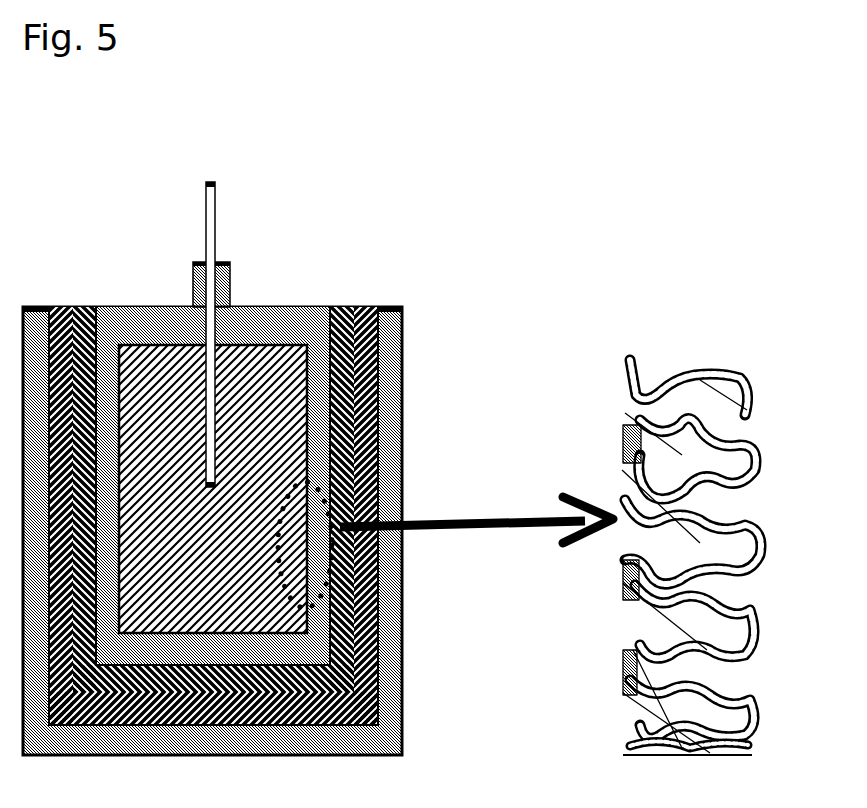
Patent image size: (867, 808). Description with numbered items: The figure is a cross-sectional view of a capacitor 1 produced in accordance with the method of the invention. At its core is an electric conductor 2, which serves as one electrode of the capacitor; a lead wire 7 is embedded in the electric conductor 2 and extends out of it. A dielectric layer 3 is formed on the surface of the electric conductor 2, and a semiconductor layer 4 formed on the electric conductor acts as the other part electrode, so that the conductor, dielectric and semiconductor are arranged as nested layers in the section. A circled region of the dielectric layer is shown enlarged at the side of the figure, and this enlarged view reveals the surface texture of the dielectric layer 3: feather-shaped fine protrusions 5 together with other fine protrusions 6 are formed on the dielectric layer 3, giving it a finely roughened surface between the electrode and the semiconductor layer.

The capacitor 1 is at (430, 405).
The electric conductor 2 is at (157, 378).
The dielectric layer 3 is at (270, 307).
The semiconductor layer 4 is at (338, 307).
The feather-shaped fine protrusions 5 is at (768, 401).
The other fine protrusions 6 is at (760, 591).
The lead wire 7 is at (206, 213).